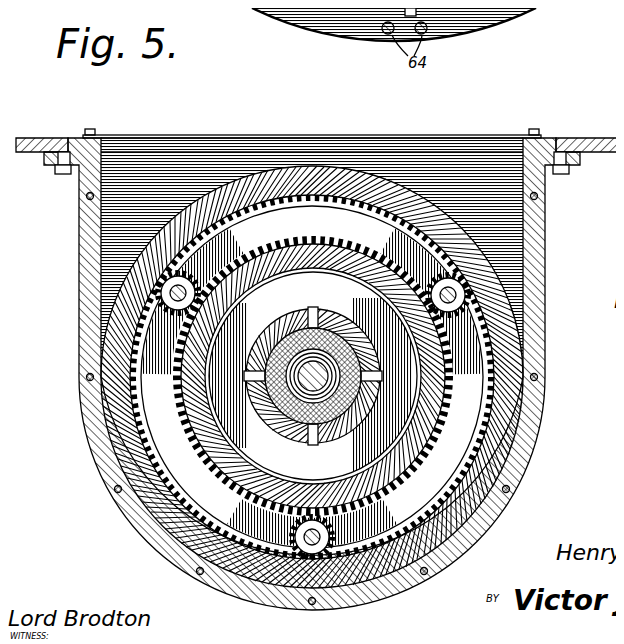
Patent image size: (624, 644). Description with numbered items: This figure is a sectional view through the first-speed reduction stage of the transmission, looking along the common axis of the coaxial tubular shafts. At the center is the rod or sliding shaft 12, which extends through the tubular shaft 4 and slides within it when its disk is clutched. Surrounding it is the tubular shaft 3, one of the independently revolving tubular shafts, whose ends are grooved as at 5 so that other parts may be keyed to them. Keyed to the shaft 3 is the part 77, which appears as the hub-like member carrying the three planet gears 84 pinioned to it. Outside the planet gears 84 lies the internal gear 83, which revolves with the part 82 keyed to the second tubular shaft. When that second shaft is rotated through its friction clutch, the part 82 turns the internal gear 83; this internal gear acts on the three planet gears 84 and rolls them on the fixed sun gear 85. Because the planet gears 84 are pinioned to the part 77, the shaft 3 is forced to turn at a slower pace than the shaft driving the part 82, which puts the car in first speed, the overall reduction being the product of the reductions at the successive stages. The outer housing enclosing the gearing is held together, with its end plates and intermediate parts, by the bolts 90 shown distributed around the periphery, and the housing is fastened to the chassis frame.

The tubular shaft 3 is at (284, 312).
The tubular shaft 4 is at (262, 357).
The groove 5 is at (347, 325).
The rod or sliding shaft 12 is at (322, 345).
The part keyed to shaft 3 77 is at (226, 233).
The part keyed to shaft 2 82 is at (120, 413).
The internal gear 83 is at (375, 195).
The planet gears 84 is at (183, 275).
The fixed sun gear 85 is at (424, 209).
The bolts 90 is at (80, 188).